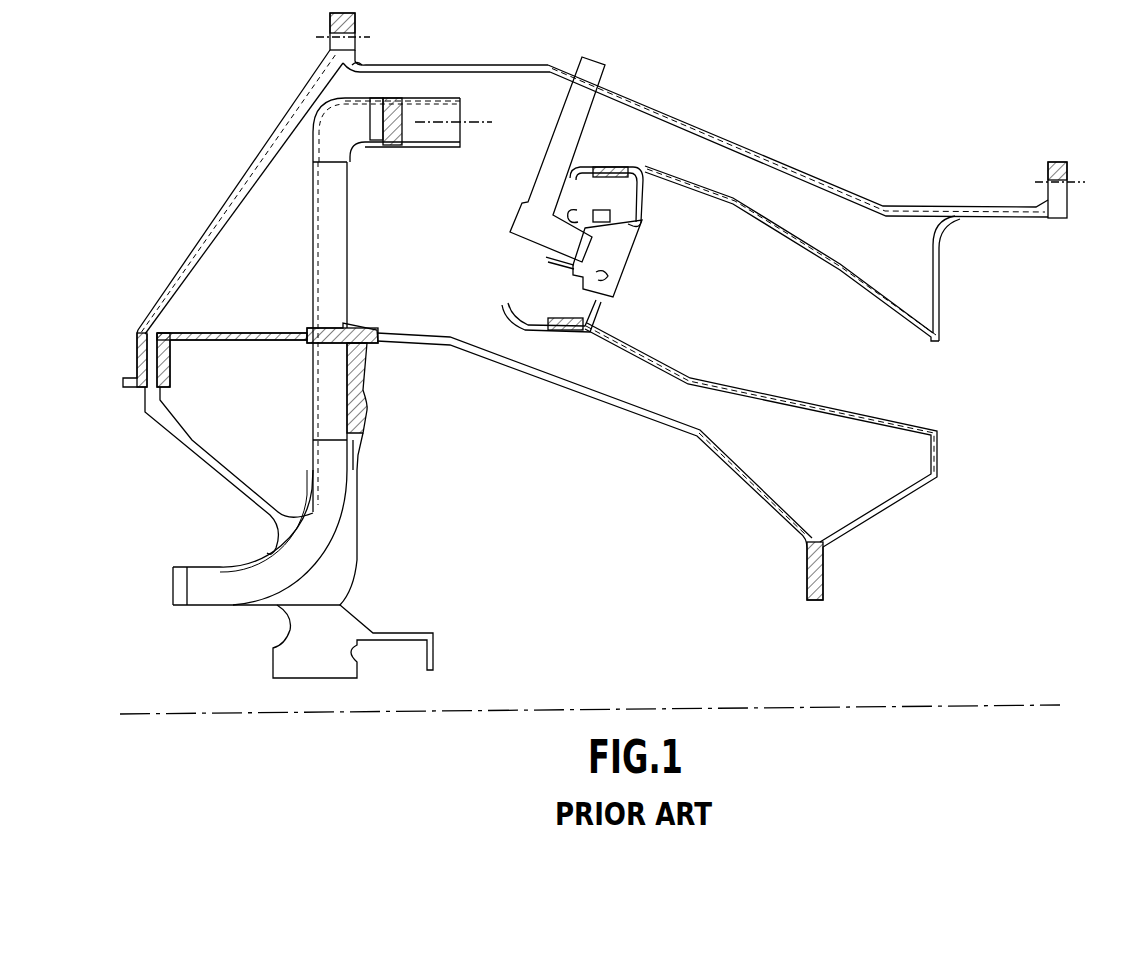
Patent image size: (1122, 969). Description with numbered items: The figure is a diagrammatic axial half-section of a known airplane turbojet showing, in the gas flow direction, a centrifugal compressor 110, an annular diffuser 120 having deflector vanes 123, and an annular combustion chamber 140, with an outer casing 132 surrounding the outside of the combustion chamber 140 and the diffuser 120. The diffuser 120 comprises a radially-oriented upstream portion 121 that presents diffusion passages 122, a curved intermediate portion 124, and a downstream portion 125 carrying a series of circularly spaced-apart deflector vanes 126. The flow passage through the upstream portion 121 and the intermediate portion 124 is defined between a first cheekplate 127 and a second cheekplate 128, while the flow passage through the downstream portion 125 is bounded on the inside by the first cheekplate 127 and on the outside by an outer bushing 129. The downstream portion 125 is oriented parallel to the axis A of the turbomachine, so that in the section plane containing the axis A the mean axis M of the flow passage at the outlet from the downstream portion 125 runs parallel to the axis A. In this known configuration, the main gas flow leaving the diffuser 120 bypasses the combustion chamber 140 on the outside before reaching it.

The centrifugal compressor 110 is at (230, 530).
The annular diffuser 120 is at (303, 137).
The radially-oriented upstream portion 121 is at (303, 238).
The diffusion passages 122 is at (332, 255).
The deflector vanes 123 is at (332, 163).
The curved intermediate portion 124 is at (318, 112).
The downstream portion 125 is at (415, 93).
The deflector vanes 126 is at (397, 128).
The first cheekplate 127 is at (355, 220).
The second cheekplate 128 is at (310, 192).
The outer bushing 129 is at (433, 97).
The outer casing 132 is at (733, 141).
The annular combustion chamber 140 is at (741, 311).
The mean axis of the flow passage M is at (493, 125).
The axis of the turbomachine A is at (942, 705).